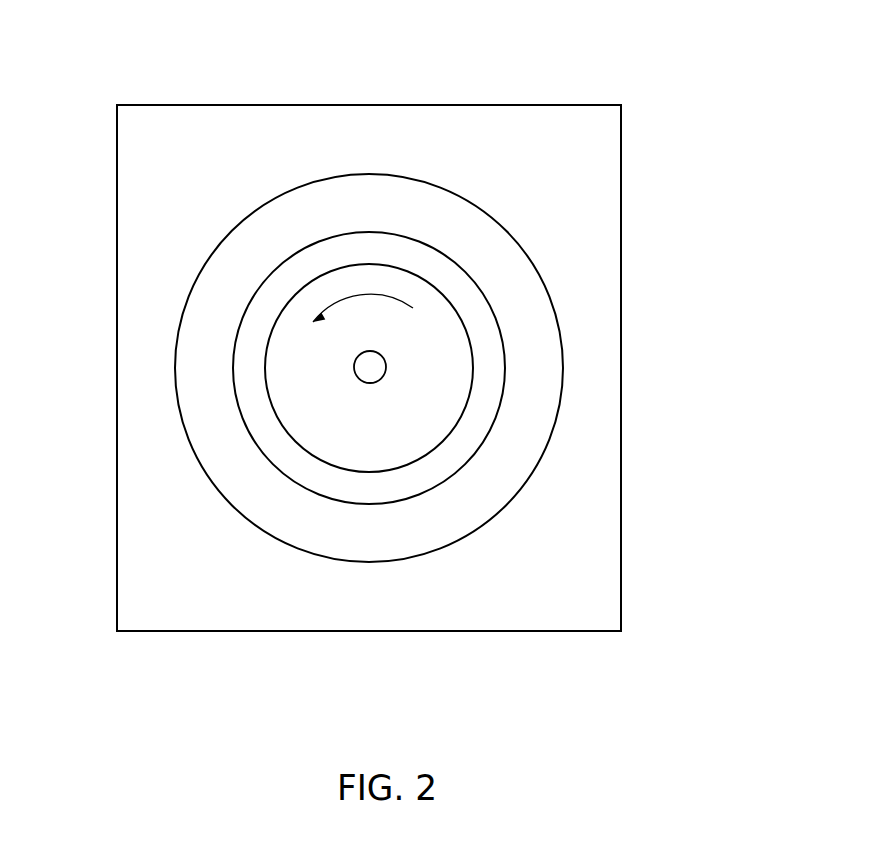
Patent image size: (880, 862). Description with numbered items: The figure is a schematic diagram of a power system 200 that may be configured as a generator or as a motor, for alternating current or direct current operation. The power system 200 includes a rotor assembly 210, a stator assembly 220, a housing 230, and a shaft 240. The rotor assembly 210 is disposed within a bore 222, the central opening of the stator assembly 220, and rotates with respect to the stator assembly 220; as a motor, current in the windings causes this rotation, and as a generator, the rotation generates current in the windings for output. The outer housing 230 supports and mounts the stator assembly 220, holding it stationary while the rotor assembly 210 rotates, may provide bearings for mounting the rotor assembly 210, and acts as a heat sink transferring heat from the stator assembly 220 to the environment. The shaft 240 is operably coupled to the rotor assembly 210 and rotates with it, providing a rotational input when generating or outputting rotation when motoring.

The power system 200 is at (155, 55).
The rotor assembly 210 is at (441, 375).
The stator assembly 220 is at (525, 275).
The bore 222 is at (457, 285).
The housing 230 is at (442, 105).
The shaft 240 is at (368, 387).